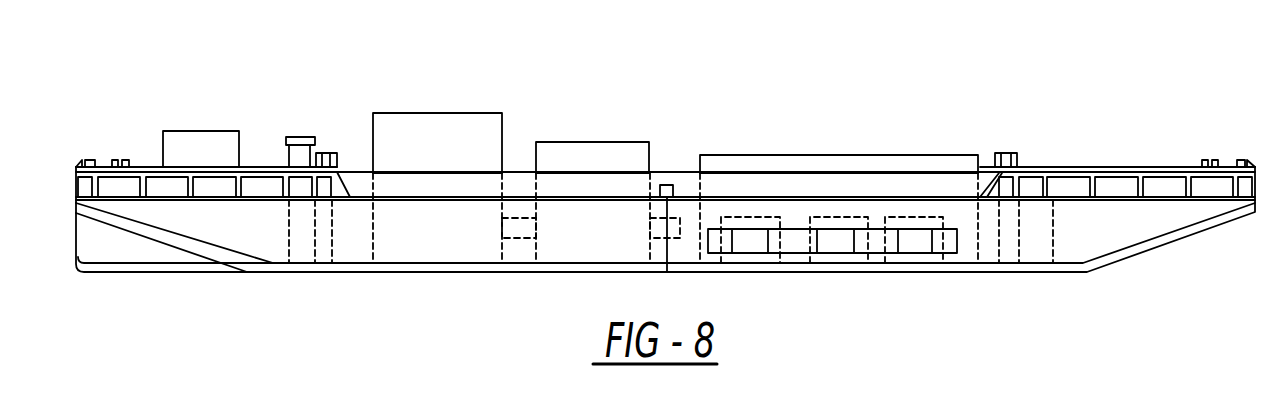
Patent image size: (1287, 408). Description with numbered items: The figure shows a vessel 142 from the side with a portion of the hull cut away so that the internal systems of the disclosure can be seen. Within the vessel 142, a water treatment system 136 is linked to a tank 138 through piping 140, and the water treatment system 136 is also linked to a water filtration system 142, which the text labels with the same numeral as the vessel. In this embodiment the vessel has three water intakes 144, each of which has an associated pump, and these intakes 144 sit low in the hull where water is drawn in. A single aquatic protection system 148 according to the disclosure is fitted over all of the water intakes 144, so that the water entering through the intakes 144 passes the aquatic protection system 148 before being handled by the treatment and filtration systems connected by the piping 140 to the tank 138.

The water treatment system 136 is at (727, 155).
The tank 138 is at (427, 113).
The piping 140 is at (518, 218).
The vessel 142 is at (582, 142).
The water intakes 144 is at (757, 229).
The aquatic protection system 148 is at (910, 253).